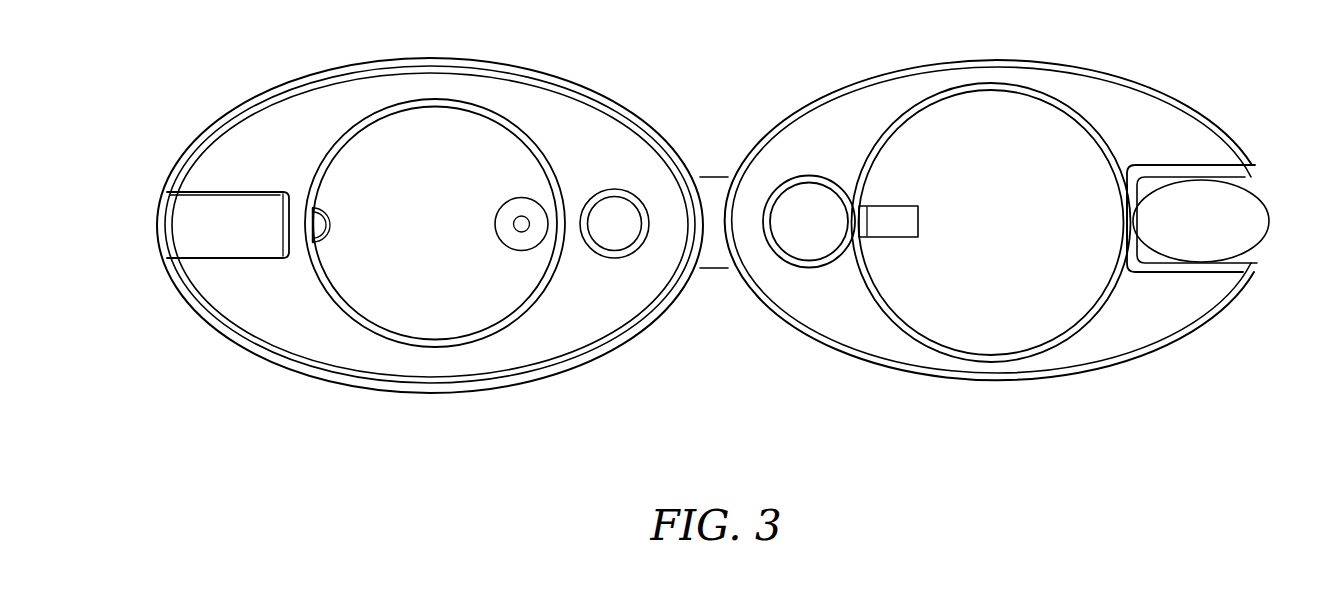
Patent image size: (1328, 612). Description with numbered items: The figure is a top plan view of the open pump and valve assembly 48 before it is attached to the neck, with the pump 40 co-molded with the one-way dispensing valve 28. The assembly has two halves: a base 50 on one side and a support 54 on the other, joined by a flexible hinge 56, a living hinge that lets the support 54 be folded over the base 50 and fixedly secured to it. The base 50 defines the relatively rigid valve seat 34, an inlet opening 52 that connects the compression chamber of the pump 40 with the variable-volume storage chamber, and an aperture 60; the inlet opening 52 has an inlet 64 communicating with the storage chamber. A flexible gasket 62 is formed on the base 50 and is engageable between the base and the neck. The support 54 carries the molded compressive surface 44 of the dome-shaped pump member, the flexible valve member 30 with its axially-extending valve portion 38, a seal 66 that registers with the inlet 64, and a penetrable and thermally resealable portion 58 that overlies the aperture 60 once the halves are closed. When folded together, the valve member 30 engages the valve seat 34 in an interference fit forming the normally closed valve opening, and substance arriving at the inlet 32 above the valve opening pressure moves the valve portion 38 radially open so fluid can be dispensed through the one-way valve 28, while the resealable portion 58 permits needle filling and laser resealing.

The one-way dispensing valve 28 is at (150, 263).
The flexible valve member 30 is at (1172, 204).
The inlet 32 is at (1121, 204).
The valve seat 34 is at (168, 208).
The axially-extending valve portion 38 is at (1252, 199).
The pump 40 is at (971, 112).
The compressive surface 44 is at (981, 330).
The pump and valve assembly 48 is at (152, 406).
The base 50 is at (473, 380).
The inlet opening 52 is at (486, 125).
The support 54 is at (892, 356).
The flexible hinge 56 is at (714, 175).
The penetrable and thermally resealable portion 58 is at (788, 235).
The aperture 60 is at (614, 200).
The flexible gasket 62 is at (606, 380).
The inlet 64 is at (518, 240).
The seal 66 is at (903, 216).